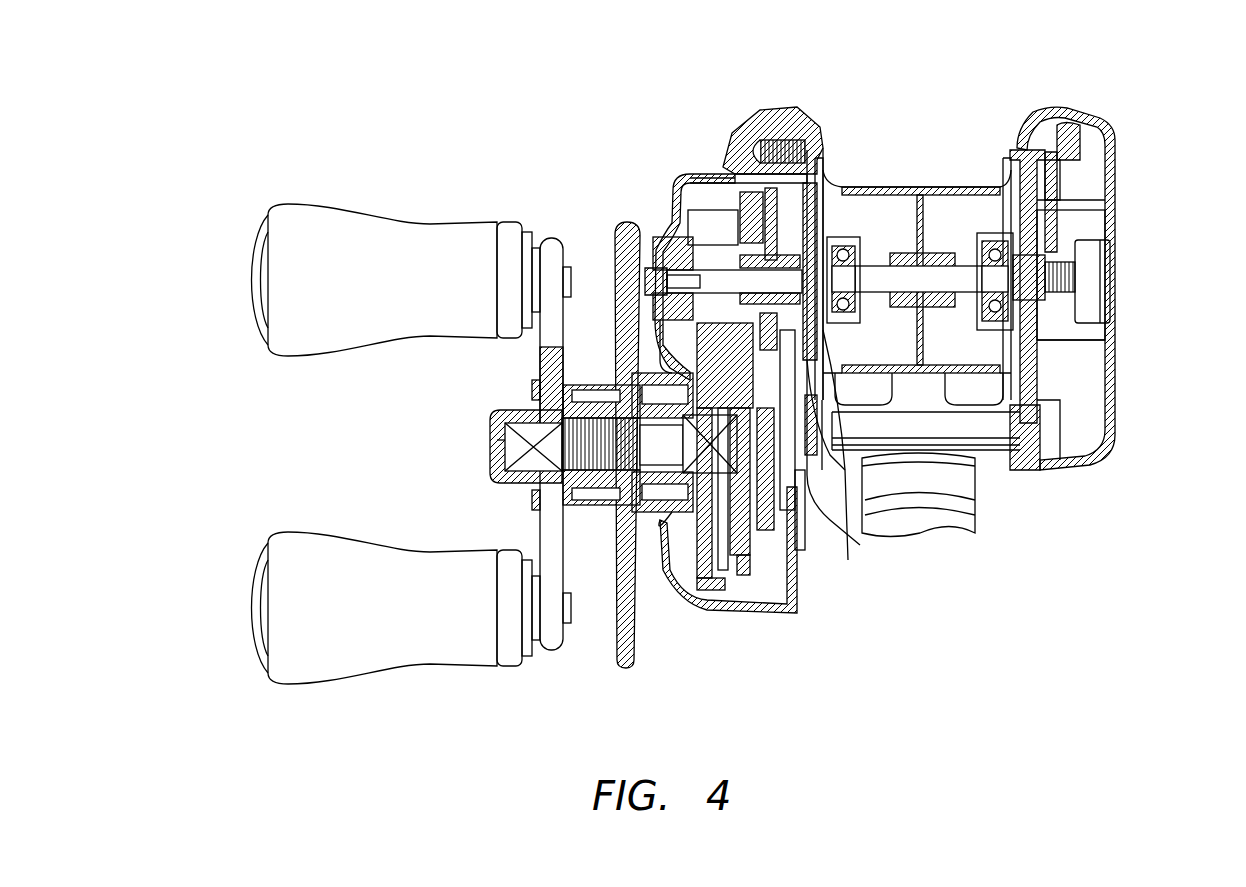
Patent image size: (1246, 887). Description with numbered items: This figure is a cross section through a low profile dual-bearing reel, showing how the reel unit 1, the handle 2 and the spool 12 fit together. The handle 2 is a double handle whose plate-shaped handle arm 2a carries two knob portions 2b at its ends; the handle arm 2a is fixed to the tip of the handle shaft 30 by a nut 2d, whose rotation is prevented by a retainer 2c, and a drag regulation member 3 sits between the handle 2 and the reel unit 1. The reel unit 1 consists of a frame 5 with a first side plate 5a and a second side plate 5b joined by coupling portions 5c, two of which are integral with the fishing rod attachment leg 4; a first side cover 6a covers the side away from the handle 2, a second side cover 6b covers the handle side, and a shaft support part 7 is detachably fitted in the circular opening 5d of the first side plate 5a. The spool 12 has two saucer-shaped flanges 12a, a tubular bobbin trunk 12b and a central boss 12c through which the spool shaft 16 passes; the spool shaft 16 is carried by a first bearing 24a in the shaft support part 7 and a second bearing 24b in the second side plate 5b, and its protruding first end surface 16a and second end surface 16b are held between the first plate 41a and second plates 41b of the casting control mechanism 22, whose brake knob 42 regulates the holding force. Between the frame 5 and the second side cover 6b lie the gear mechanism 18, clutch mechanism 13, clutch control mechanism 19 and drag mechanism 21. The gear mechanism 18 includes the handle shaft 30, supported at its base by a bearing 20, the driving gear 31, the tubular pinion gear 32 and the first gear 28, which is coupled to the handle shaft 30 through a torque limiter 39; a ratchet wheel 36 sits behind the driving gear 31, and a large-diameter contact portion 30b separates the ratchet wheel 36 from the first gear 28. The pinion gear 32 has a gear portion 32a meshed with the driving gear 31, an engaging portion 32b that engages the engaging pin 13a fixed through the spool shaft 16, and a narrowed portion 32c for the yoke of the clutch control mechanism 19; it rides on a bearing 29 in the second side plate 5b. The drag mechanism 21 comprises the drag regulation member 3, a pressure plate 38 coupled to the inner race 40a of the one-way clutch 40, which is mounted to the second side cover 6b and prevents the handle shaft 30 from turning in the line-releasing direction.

The reel unit 1 is at (795, 100).
The handle 2 is at (408, 203).
The handle arm 2a is at (540, 548).
The knob portions 2b is at (293, 230).
The retainer 2c is at (533, 383).
The nut 2d is at (497, 437).
The drag regulation member 3 is at (624, 662).
The fishing rod attachment leg 4 is at (960, 493).
The frame 5 is at (850, 108).
The first side plate 5a is at (1025, 120).
The second side plate 5b is at (808, 108).
The coupling portions 5c is at (1003, 450).
The circular opening 5d is at (1048, 128).
The first side cover 6a is at (1115, 118).
The second side cover 6b is at (752, 115).
The shaft support part 7 is at (1050, 140).
The spool 12 is at (948, 180).
The flanges 12a is at (848, 185).
The bobbin trunk 12b is at (905, 165).
The boss 12c is at (930, 270).
The clutch mechanism 13 is at (838, 320).
The engaging pin 13a is at (822, 330).
The spool shaft 16 is at (898, 266).
The first end surface 16a is at (1100, 160).
The second end surface 16b is at (660, 262).
The gear mechanism 18 is at (732, 540).
The clutch control mechanism 19 is at (705, 175).
The bearing 20 is at (812, 470).
The drag mechanism 21 is at (684, 555).
The casting control mechanism 22 is at (1103, 233).
The first bearing 24a is at (1007, 320).
The second bearing 24b is at (860, 307).
The first gear 28 is at (780, 500).
The bearing 29 is at (795, 430).
The handle shaft 30 is at (493, 447).
The large-diameter contact portion 30b is at (760, 520).
The driving gear 31 is at (703, 560).
The pinion gear 32 is at (703, 215).
The gear portion 32a is at (662, 250).
The engaging portion 32b is at (735, 198).
The narrowed portion 32c is at (672, 168).
The ratchet wheel 36 is at (752, 540).
The pressure plate 38 is at (690, 543).
The torque limiter 39 is at (800, 480).
The one-way clutch 40 is at (572, 383).
The inner race 40a is at (560, 415).
The first plate 41a is at (1103, 317).
The second plates 41b is at (640, 276).
The brake knob 42 is at (1102, 278).